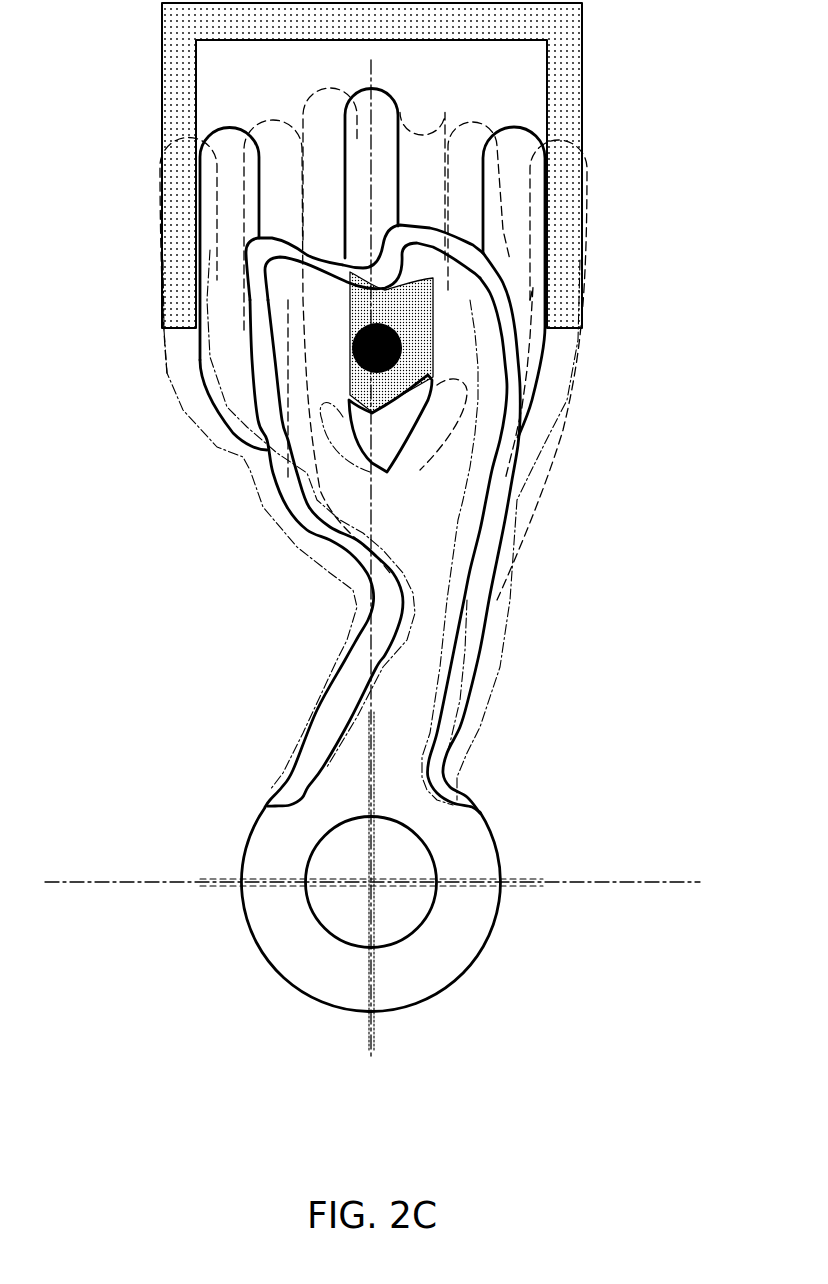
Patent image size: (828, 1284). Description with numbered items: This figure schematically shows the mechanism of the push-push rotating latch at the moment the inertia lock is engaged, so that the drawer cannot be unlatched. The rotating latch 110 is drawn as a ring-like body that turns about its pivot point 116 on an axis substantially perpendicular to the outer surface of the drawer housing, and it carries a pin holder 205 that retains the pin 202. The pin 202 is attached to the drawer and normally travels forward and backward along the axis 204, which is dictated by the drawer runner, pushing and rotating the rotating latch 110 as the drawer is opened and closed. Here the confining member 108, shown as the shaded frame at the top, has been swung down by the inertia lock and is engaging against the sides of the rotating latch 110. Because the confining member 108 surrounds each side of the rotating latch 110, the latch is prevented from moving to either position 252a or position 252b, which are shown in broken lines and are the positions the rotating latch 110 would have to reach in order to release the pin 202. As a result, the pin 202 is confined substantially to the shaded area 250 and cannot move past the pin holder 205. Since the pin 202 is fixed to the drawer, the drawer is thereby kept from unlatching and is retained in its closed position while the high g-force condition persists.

The confining member 108 is at (162, 72).
The position 252a is at (162, 176).
The position 252b is at (583, 170).
The pin 202 is at (352, 346).
The shaded area 250 is at (430, 352).
The pin holder 205 is at (403, 431).
The rotating latch 110 is at (487, 951).
The pivot point 116 is at (355, 897).
The axis 204 is at (372, 1058).